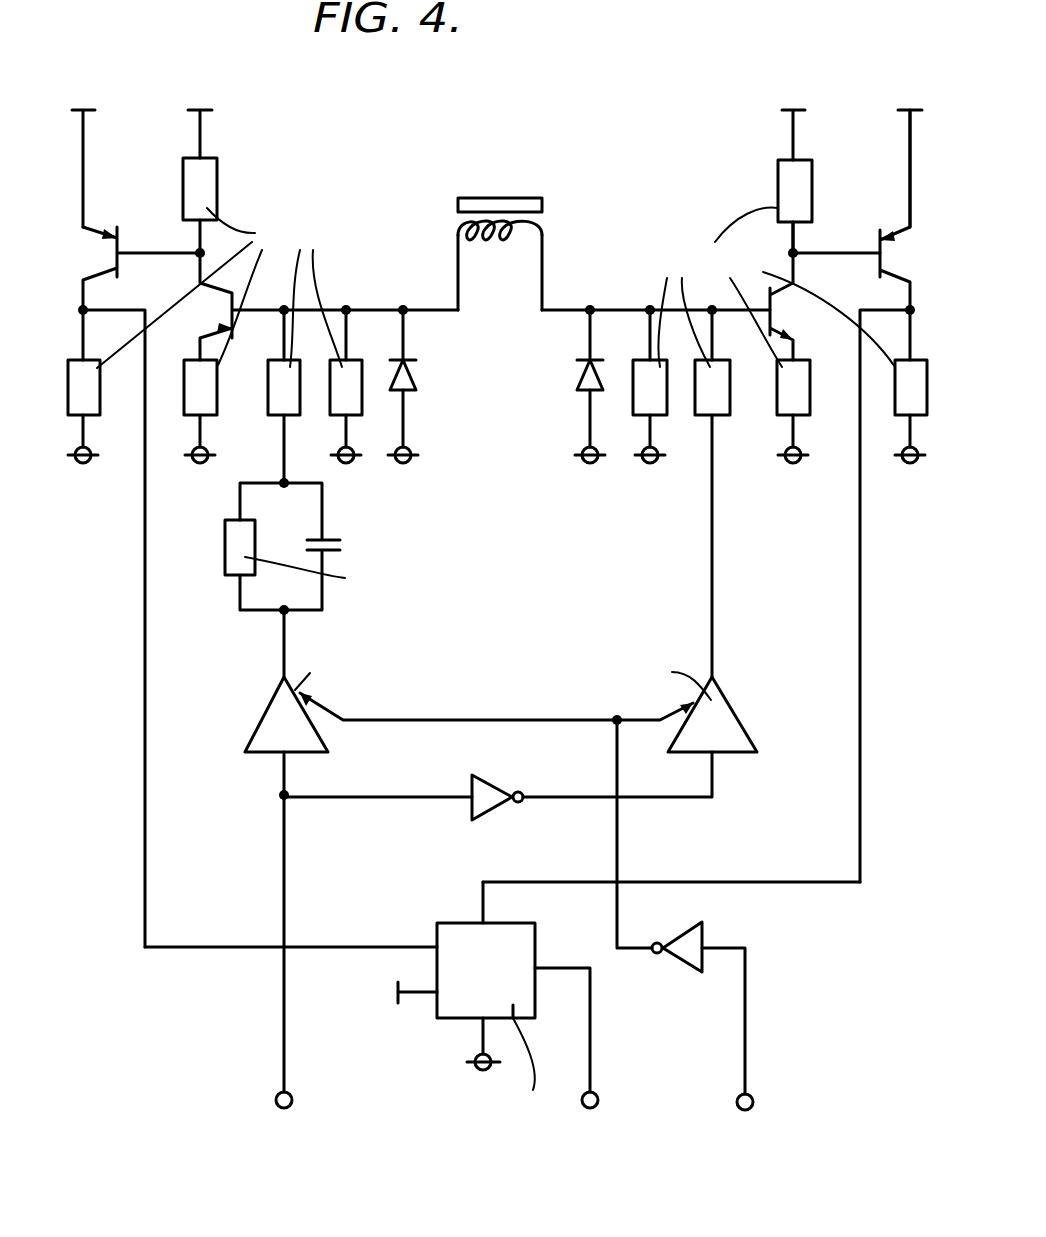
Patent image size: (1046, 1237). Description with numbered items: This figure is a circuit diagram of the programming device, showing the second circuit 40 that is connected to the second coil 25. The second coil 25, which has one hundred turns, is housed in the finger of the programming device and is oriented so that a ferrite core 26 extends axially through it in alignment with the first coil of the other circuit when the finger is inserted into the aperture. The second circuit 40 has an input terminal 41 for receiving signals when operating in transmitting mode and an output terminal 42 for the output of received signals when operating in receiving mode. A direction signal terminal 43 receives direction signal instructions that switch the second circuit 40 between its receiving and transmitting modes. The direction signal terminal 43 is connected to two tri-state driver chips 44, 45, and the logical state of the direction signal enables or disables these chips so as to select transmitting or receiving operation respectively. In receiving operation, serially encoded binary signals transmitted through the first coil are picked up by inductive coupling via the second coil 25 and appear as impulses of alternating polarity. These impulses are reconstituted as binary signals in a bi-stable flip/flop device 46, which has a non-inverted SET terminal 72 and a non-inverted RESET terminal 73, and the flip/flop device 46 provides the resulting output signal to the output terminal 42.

The second circuit 40 is at (652, 114).
The ferrite core 26 is at (472, 198).
The second coil 25 is at (542, 233).
The tri-state driver chip 44 is at (266, 715).
The tri-state driver chip 45 is at (717, 720).
The bi-stable flip/flop device 46 is at (490, 980).
The RESET terminal 73 is at (483, 920).
The SET terminal 72 is at (480, 1020).
The input terminal 41 is at (283, 1121).
The output terminal 42 is at (588, 1121).
The direction signal terminal 43 is at (746, 1124).